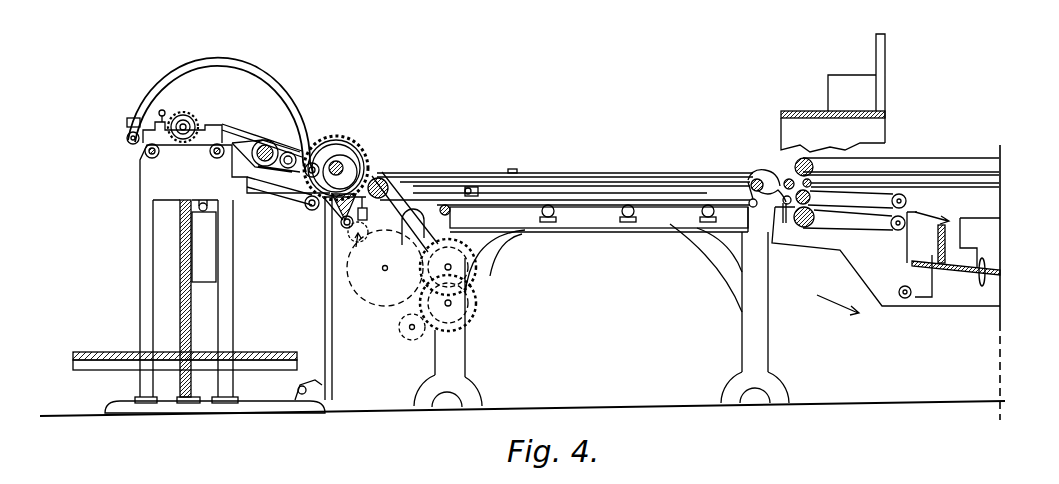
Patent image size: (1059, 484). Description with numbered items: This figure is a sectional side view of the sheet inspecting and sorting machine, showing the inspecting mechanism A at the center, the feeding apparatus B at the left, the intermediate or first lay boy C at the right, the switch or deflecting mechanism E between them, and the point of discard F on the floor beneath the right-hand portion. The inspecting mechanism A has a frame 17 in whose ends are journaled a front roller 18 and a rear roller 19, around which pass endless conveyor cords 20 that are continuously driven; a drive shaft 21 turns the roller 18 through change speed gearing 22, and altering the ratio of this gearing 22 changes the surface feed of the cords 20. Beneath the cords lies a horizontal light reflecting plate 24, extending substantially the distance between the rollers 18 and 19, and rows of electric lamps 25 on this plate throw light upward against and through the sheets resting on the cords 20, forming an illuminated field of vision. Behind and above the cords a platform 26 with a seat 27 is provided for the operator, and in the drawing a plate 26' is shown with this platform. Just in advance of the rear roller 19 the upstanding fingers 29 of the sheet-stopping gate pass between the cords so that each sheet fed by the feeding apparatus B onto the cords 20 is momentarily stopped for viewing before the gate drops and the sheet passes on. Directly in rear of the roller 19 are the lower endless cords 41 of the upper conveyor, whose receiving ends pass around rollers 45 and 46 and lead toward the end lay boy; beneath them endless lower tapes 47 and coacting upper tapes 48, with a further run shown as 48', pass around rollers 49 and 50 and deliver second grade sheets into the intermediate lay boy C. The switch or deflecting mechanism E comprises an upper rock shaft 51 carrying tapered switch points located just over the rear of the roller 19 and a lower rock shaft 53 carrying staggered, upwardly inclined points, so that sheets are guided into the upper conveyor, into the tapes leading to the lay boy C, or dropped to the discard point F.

The frame 17 is at (453, 355).
The roller 18 is at (387, 180).
The roller 19 is at (767, 173).
The cords 20 is at (553, 175).
The drive shaft 21 is at (402, 334).
The change speed gearing 22 is at (364, 304).
The light reflecting plate 24 is at (593, 228).
The electric lamps 25 is at (625, 225).
The platform 26 is at (719, 181).
The plate 26' is at (853, 130).
The seat 27 is at (855, 70).
The upstanding fingers 29 is at (755, 177).
The lower endless cords 41 is at (983, 179).
The roller 45 is at (811, 181).
The roller 46 is at (808, 160).
The lower tapes 47 is at (854, 220).
The upper tapes 48 is at (901, 165).
The belt 48' is at (857, 199).
The roller 49 is at (812, 226).
The roller 50 is at (811, 197).
The upper rock shaft 51 is at (786, 178).
The lower rock shaft 53 is at (788, 206).
The inspecting mechanism A is at (580, 287).
The feeding apparatus B is at (220, 235).
The intermediate or first lay boy C is at (962, 255).
The switch or deflecting mechanism E is at (774, 180).
The point of discard F is at (842, 340).